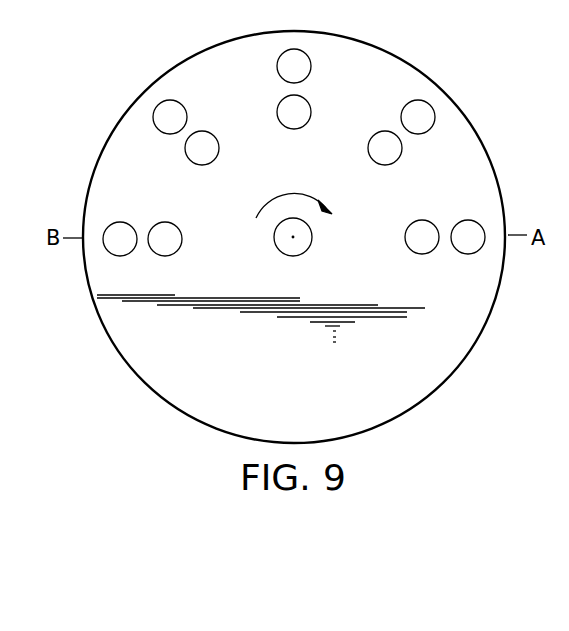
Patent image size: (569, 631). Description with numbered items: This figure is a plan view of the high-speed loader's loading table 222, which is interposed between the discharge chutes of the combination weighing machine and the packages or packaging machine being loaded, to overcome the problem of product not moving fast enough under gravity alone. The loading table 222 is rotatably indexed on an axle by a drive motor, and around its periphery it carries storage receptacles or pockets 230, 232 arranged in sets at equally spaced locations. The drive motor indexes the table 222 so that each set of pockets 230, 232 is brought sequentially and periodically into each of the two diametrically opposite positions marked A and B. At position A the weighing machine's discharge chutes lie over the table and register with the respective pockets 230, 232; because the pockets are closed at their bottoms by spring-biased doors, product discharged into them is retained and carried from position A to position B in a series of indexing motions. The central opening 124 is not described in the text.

The loading table 222 is at (456, 101).
The storage receptacle or pocket 230 is at (182, 102).
The storage receptacle or pocket 232 is at (212, 134).
The central shaft opening 124 is at (311, 246).